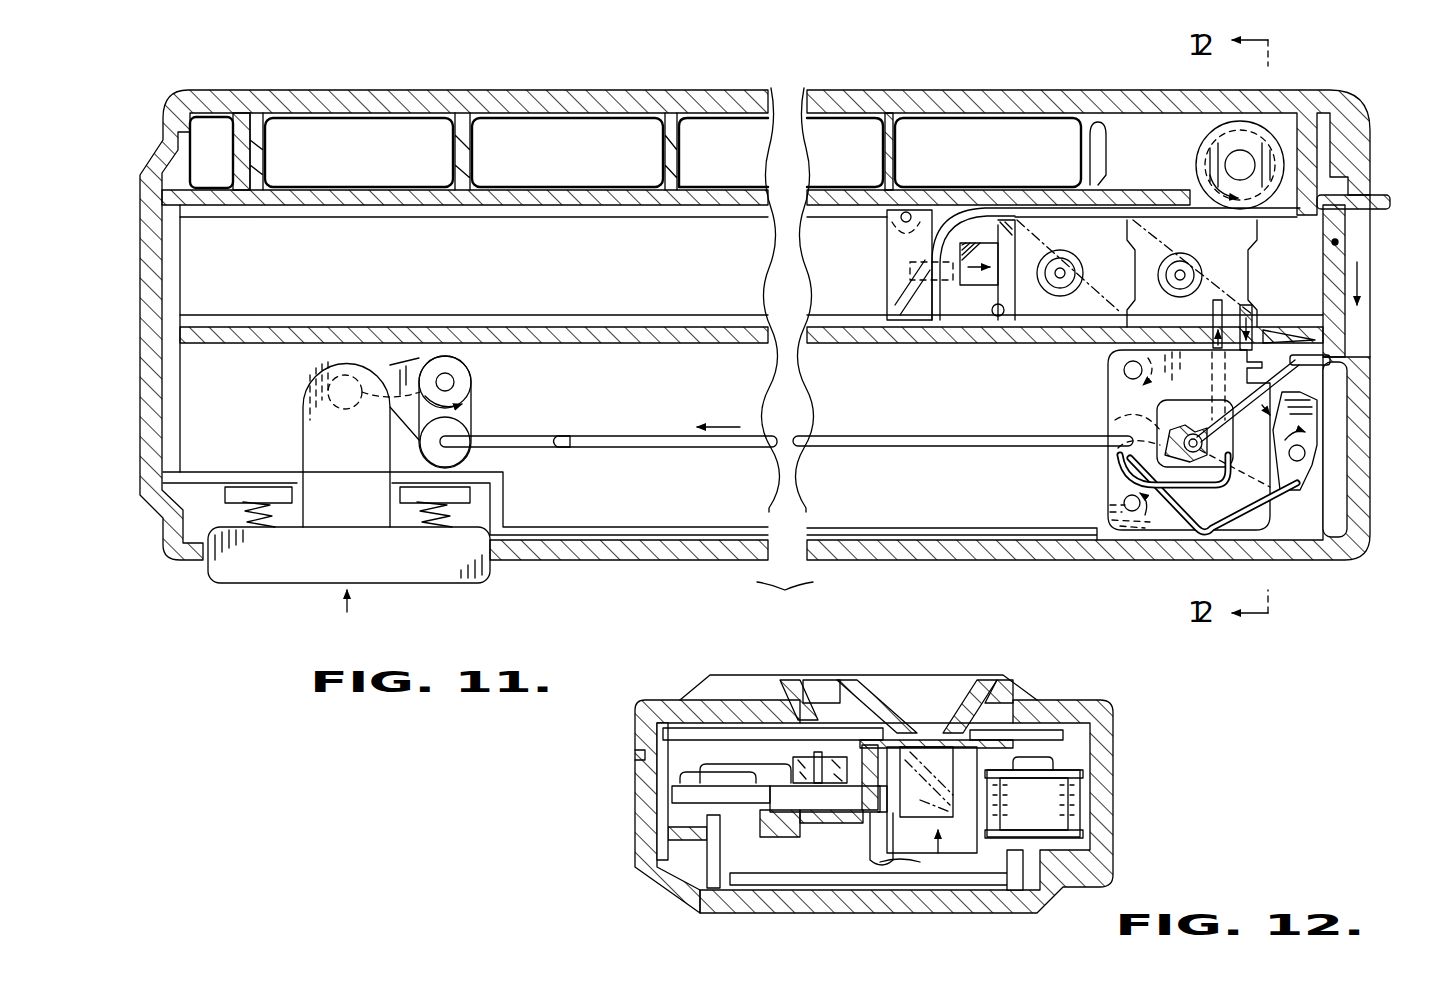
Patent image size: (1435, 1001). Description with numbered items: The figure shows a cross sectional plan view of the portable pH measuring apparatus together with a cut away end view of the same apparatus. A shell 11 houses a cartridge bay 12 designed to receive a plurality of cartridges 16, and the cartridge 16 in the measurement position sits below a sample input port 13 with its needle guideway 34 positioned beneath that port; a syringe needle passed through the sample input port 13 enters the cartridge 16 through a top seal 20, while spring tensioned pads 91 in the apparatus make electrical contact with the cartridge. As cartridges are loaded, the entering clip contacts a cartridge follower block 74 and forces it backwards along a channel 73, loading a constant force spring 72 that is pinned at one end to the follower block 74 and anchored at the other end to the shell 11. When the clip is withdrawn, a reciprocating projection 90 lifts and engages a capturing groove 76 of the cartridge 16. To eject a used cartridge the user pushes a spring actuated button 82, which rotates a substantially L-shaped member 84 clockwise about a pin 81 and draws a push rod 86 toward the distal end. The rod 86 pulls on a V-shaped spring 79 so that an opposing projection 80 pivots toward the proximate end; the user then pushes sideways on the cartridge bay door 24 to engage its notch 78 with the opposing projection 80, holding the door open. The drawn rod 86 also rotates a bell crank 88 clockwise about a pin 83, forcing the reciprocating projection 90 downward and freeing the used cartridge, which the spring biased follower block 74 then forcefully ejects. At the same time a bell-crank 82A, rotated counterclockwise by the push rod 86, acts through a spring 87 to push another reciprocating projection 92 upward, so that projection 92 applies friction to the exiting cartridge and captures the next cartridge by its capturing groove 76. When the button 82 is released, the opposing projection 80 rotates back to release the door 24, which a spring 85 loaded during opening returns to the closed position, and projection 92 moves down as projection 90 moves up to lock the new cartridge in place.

In FIG. 11, the shell 11 is at (1085, 561).
In FIG. 12, the shell 11 is at (637, 762).
In FIG. 11, the cartridge bay 12 is at (672, 235).
In FIG. 12, the cartridge bay 12 is at (952, 912).
In FIG. 12, the sample input port 13 is at (958, 674).
In FIG. 11, the cartridge 16 is at (1245, 242).
In FIG. 12, the cartridge 16 is at (985, 740).
In FIG. 12, the top seal 20 is at (908, 730).
In FIG. 11, the cartridge bay door 24 is at (1380, 195).
In FIG. 12, the needle guideway 34 is at (922, 738).
In FIG. 11, the constant force spring 72 is at (1268, 132).
In FIG. 12, the constant force spring 72 is at (1083, 795).
In FIG. 11, the channel 73 is at (552, 219).
In FIG. 11, the cartridge follower block 74 is at (925, 213).
In FIG. 11, the capturing groove 76 is at (1253, 322).
In FIG. 12, the capturing groove 76 is at (880, 862).
In FIG. 11, the notch 78 is at (1336, 244).
In FIG. 11, the V-shaped spring 79 is at (1262, 510).
In FIG. 11, the opposing projection 80 is at (1318, 407).
In FIG. 11, the pin 81 is at (460, 376).
In FIG. 11, the spring actuated button 82 is at (276, 583).
In FIG. 11, the bell-crank 82A is at (1107, 507).
In FIG. 12, the bell-crank 82A is at (678, 767).
In FIG. 11, the pin 83 is at (1124, 371).
In FIG. 12, the pin 83 is at (813, 760).
In FIG. 11, the L-shaped member 84 is at (472, 403).
In FIG. 11, the spring 85 is at (1332, 386).
In FIG. 11, the push rod 86 is at (944, 448).
In FIG. 11, the spring 87 is at (1208, 447).
In FIG. 12, the spring 87 is at (704, 770).
In FIG. 11, the bell crank 88 is at (1108, 400).
In FIG. 12, the bell crank 88 is at (847, 747).
In FIG. 11, the reciprocating projection 90 is at (1256, 330).
In FIG. 12, the reciprocating projection 90 is at (836, 805).
In FIG. 12, the spring tensioned pads 91 is at (926, 873).
In FIG. 11, the reciprocating projection 92 is at (1216, 330).
In FIG. 12, the reciprocating projection 92 is at (785, 803).